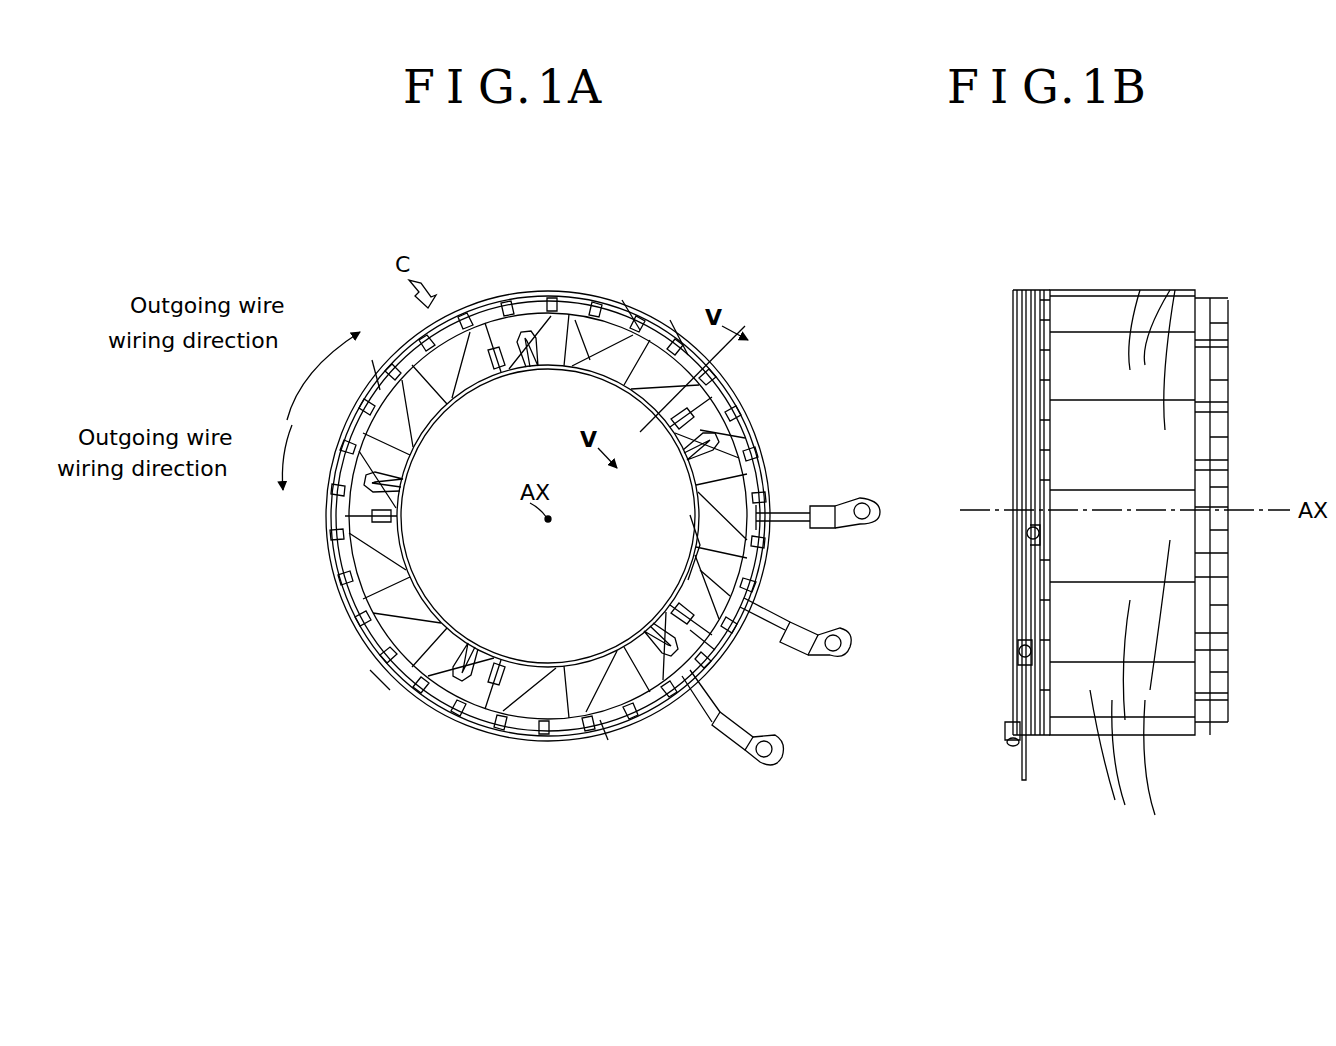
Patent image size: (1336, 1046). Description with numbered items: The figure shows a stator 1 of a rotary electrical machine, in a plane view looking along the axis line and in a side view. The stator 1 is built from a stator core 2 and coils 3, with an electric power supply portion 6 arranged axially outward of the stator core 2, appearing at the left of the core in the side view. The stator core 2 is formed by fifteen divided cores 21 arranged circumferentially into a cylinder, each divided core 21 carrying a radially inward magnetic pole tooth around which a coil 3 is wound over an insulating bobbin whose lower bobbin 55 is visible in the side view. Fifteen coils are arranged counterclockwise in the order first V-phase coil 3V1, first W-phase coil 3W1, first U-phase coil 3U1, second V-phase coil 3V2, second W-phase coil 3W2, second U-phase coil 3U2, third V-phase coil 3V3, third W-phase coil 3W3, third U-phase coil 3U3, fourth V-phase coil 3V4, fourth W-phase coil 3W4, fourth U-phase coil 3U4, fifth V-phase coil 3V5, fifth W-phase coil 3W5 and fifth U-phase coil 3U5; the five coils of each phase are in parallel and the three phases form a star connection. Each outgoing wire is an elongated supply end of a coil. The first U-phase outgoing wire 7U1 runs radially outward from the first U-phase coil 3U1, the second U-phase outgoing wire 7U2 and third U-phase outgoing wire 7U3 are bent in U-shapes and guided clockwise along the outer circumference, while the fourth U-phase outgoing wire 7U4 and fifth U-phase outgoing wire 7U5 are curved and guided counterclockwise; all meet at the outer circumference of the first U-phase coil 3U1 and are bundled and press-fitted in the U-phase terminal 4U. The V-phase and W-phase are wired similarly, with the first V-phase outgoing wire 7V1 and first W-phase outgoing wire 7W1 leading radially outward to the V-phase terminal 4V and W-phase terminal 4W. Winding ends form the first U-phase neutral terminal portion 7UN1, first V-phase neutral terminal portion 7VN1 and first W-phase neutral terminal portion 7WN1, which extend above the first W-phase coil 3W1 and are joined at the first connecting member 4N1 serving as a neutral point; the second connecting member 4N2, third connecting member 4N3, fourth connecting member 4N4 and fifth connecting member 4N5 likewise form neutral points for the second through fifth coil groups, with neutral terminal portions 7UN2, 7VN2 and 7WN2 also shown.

In FIG. 1A, the stator 1 is at (418, 228).
In FIG. 1B, the stator 1 is at (1068, 250).
In FIG. 1A, the stator core 2 is at (546, 516).
In FIG. 1B, the stator core 2 is at (1096, 270).
In FIG. 1A, the coil 3 is at (602, 300).
In FIG. 1A, the electric power supply portion 6 is at (536, 286).
In FIG. 1B, the electric power supply portion 6 is at (990, 305).
In FIG. 1B, the divided core 21 is at (1168, 420).
In FIG. 1B, the lower bobbin 55 is at (1225, 378).
In FIG. 1A, the first U-phase coil 3U1 is at (663, 520).
In FIG. 1A, the second U-phase coil 3U2 is at (599, 402).
In FIG. 1A, the third U-phase coil 3U3 is at (460, 445).
In FIG. 1A, the fourth U-phase coil 3U4 is at (454, 596).
In FIG. 1A, the fifth U-phase coil 3U5 is at (586, 638).
In FIG. 1A, the first V-phase coil 3V1 is at (621, 609).
In FIG. 1A, the second V-phase coil 3V2 is at (651, 474).
In FIG. 1A, the third V-phase coil 3V3 is at (541, 394).
In FIG. 1A, the fourth V-phase coil 3V4 is at (436, 491).
In FIG. 1A, the fifth V-phase coil 3V5 is at (486, 627).
In FIG. 1A, the first W-phase coil 3W1 is at (652, 574).
In FIG. 1A, the second W-phase coil 3W2 is at (629, 429).
In FIG. 1A, the third W-phase coil 3W3 is at (489, 412).
In FIG. 1A, the fourth W-phase coil 3W4 is at (433, 546).
In FIG. 1A, the fifth W-phase coil 3W5 is at (528, 654).
In FIG. 1A, the U-phase terminal 4U is at (848, 507).
In FIG. 1B, the U-phase terminal 4U is at (1026, 538).
In FIG. 1A, the V-phase terminal 4V is at (755, 742).
In FIG. 1B, the V-phase terminal 4V is at (1010, 757).
In FIG. 1A, the W-phase terminal 4W is at (835, 630).
In FIG. 1B, the W-phase terminal 4W is at (1016, 654).
In FIG. 1A, the first connecting member 4N1 is at (690, 612).
In FIG. 1A, the second connecting member 4N2 is at (700, 410).
In FIG. 1A, the third connecting member 4N3 is at (490, 345).
In FIG. 1A, the fourth connecting member 4N4 is at (372, 518).
In FIG. 1A, the fifth connecting member 4N5 is at (493, 690).
In FIG. 1A, the first U-phase outgoing wire 7U1 is at (770, 525).
In FIG. 1A, the second U-phase outgoing wire 7U2 is at (628, 320).
In FIG. 1A, the third U-phase outgoing wire 7U3 is at (372, 375).
In FIG. 1A, the fourth U-phase outgoing wire 7U4 is at (372, 672).
In FIG. 1A, the fifth U-phase outgoing wire 7U5 is at (606, 738).
In FIG. 1A, the first W-phase outgoing wire 7W1 is at (772, 605).
In FIG. 1A, the first V-phase outgoing wire 7V1 is at (695, 730).
In FIG. 1A, the first U-phase neutral terminal portion 7UN1 is at (690, 560).
In FIG. 1A, the second U-phase neutral terminal portion 7UN2 is at (588, 355).
In FIG. 1A, the first V-phase neutral terminal portion 7VN1 is at (715, 660).
In FIG. 1A, the second V-phase neutral terminal portion 7VN2 is at (742, 450).
In FIG. 1A, the first W-phase neutral terminal portion 7WN1 is at (730, 618).
In FIG. 1A, the second W-phase neutral terminal portion 7WN2 is at (685, 350).